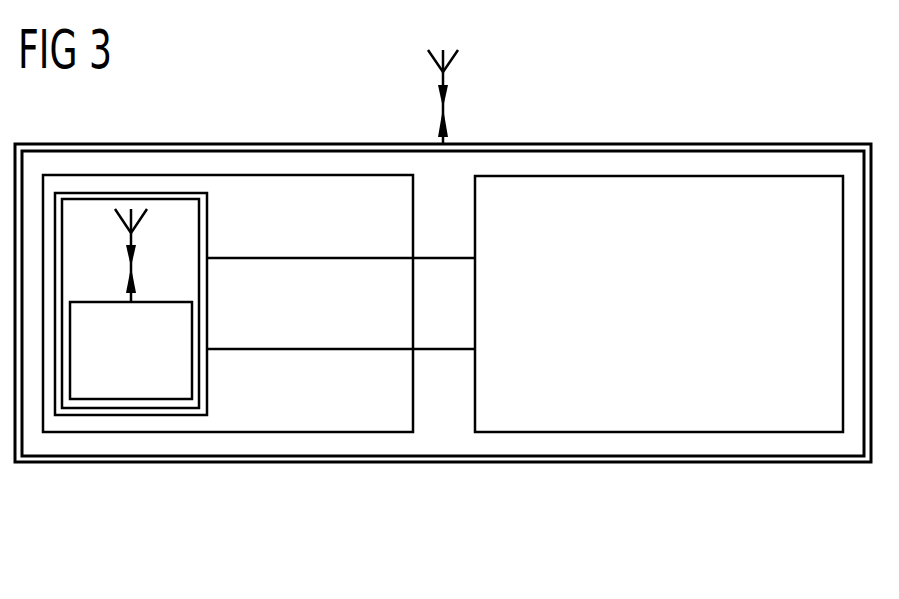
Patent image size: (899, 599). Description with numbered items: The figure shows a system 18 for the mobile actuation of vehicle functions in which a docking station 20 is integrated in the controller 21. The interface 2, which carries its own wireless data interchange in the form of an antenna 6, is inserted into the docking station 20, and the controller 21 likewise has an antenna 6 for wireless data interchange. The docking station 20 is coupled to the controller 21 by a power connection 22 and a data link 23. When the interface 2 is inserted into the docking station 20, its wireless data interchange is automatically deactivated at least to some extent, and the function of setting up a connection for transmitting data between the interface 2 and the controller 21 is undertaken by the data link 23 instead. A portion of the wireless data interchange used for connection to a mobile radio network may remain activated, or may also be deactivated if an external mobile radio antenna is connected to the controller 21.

The system 18 is at (443, 483).
The antenna 6 is at (437, 66).
The docking station 20 is at (264, 433).
The controller 21 is at (658, 462).
The interface 2 is at (208, 305).
The power connection 22 is at (311, 256).
The data link 23 is at (311, 347).